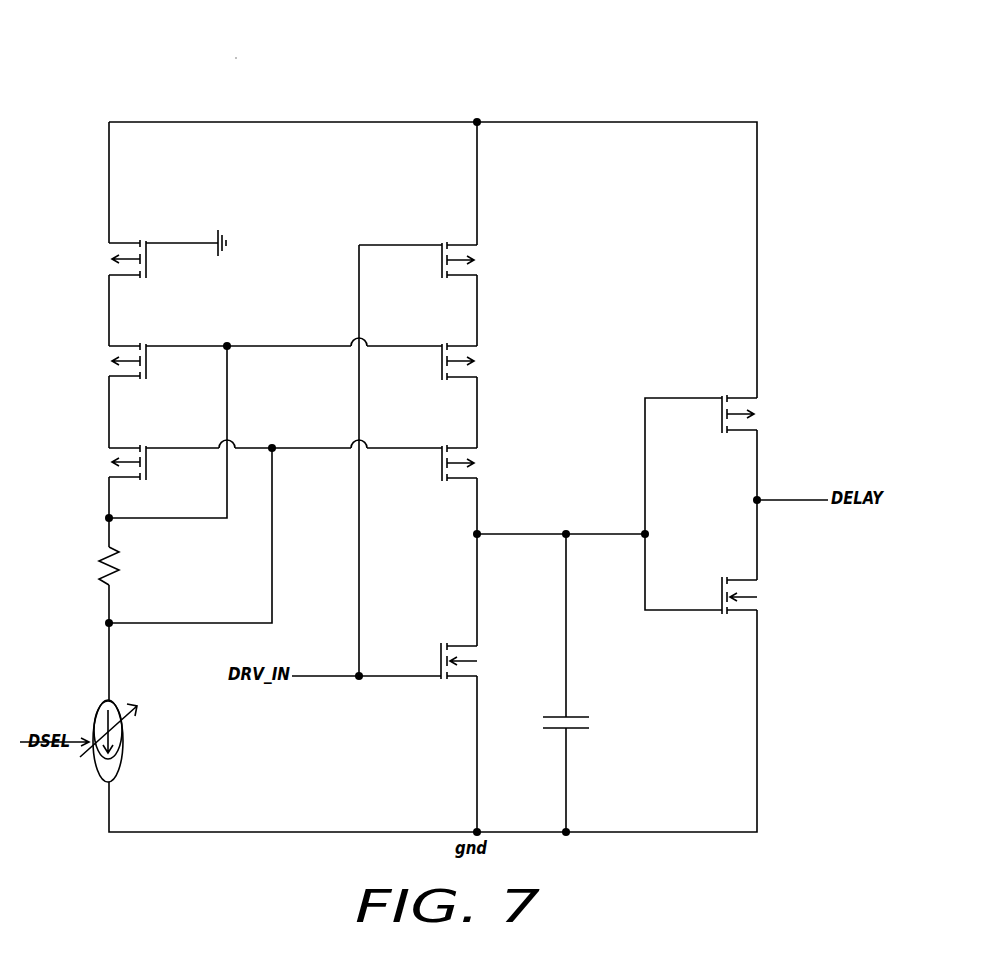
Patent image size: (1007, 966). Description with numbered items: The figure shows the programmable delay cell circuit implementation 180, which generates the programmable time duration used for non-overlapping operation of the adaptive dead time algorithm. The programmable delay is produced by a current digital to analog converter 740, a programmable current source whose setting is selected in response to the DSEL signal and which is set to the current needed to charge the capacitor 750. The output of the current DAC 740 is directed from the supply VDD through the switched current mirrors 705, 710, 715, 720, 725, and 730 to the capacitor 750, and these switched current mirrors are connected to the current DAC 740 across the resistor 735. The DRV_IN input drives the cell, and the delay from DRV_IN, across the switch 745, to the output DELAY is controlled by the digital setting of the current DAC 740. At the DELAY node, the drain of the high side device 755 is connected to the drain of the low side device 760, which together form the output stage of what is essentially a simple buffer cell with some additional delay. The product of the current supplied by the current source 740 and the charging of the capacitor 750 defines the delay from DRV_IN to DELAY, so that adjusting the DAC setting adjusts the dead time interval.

The programmable delay cell circuit implementation 180 is at (235, 57).
The switched current mirror 705 is at (100, 270).
The switched current mirror 710 is at (100, 375).
The switched current mirror 715 is at (100, 477).
The switched current mirror 720 is at (487, 272).
The switched current mirror 725 is at (487, 374).
The switched current mirror 730 is at (487, 477).
The resistor 735 is at (90, 562).
The current digital to analog converter 740 is at (85, 715).
The switch 745 is at (485, 672).
The capacitor 750 is at (588, 722).
The high side device 755 is at (767, 426).
The low side device 760 is at (767, 606).